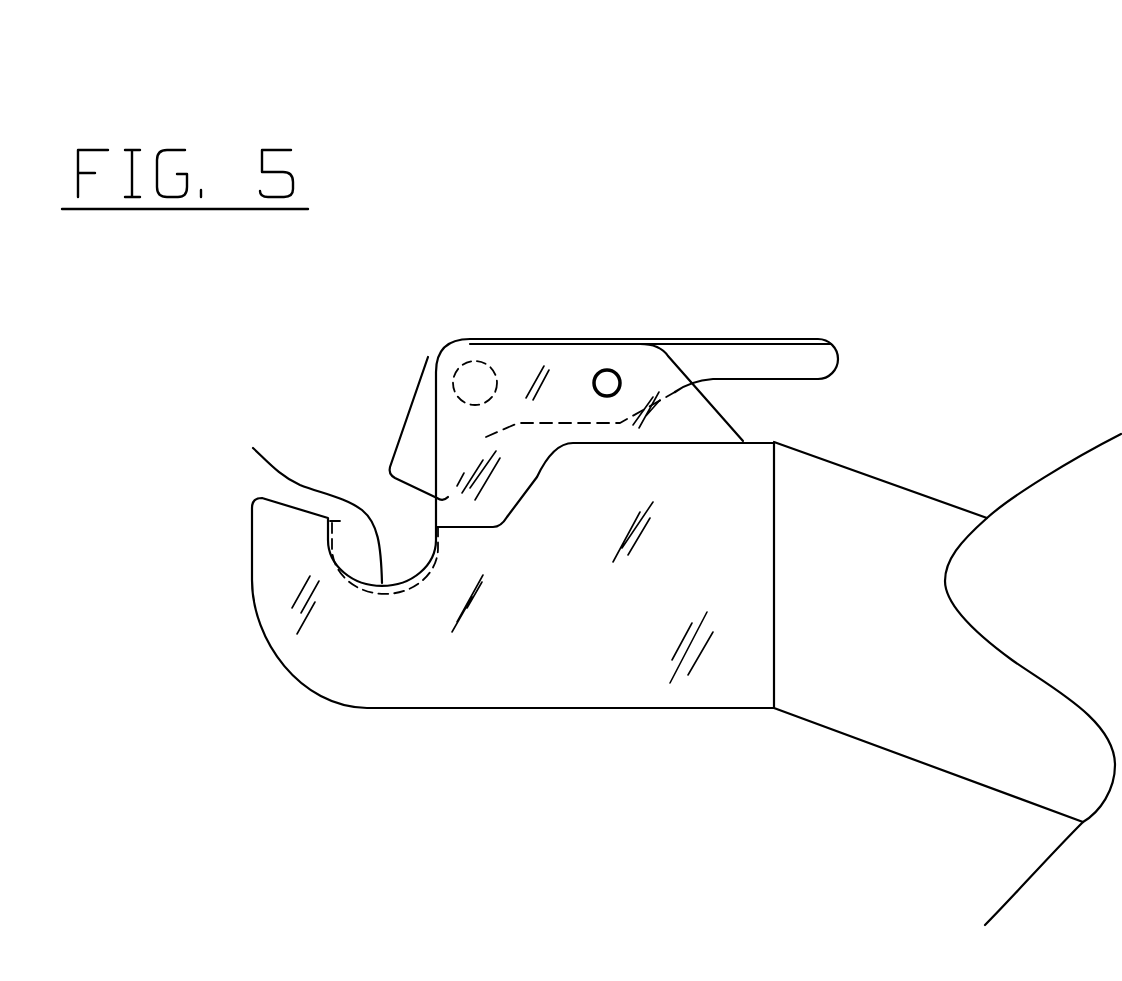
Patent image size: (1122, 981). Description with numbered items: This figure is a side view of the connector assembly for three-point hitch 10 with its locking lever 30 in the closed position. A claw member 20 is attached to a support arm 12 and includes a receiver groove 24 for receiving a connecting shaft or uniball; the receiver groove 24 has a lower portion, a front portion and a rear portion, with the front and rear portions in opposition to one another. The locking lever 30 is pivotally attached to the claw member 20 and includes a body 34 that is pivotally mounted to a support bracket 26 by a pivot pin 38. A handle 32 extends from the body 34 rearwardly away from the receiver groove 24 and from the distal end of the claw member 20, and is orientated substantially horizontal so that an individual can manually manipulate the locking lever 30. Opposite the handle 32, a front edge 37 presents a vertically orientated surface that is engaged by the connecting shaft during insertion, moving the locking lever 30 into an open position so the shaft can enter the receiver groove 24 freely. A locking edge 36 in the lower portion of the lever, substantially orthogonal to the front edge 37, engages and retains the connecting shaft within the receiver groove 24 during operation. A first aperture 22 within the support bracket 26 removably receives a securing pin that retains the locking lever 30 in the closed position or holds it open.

The connector assembly for three-point hitch 10 is at (918, 178).
The support arm 12 is at (897, 534).
The claw member 20 is at (308, 697).
The first aperture 22 is at (617, 370).
The receiver groove 24 is at (311, 507).
The support bracket 26 is at (705, 417).
The locking lever 30 is at (803, 340).
The handle 32 is at (713, 358).
The body 34 is at (420, 392).
The locking edge 36 is at (407, 482).
The front edge 37 is at (428, 457).
The pivot pin 38 is at (500, 382).